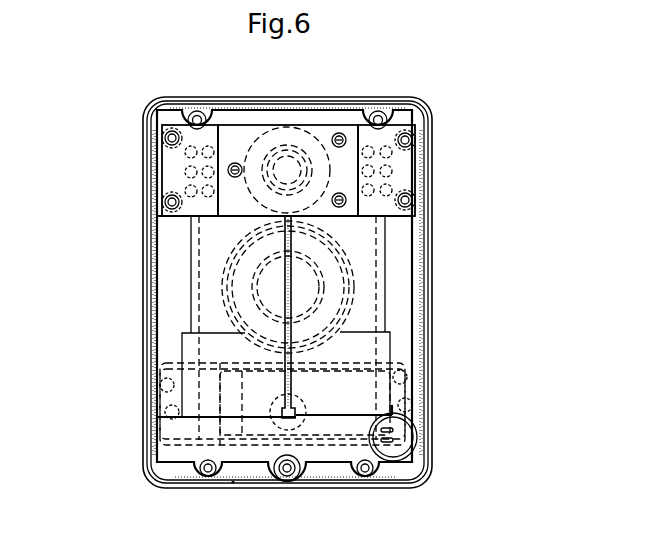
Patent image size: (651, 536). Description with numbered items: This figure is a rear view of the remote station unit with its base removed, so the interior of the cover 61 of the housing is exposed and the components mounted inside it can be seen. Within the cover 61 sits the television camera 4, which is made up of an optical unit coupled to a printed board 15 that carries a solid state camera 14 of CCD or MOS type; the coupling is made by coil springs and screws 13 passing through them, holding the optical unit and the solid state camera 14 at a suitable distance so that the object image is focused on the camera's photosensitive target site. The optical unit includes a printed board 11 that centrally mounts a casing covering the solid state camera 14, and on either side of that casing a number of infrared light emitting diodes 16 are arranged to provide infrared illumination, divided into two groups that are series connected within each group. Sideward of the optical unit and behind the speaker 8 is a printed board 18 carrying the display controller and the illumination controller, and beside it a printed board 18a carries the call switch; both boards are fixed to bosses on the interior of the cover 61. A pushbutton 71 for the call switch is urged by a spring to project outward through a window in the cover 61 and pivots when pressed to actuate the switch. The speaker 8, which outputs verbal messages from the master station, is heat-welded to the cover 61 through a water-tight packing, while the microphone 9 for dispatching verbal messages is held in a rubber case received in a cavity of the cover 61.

The television camera 4 is at (250, 122).
The speaker 8 is at (240, 308).
The microphone 9 is at (410, 437).
The printed board 11 is at (173, 163).
The screws 13 is at (341, 132).
The solid state camera 14 is at (289, 127).
The printed board 15 is at (318, 126).
The infrared light emitting diodes 16 is at (188, 172).
The printed board 18 is at (178, 283).
The printed board 18a is at (187, 432).
The cover 61 is at (431, 302).
The pushbutton 71 is at (233, 490).